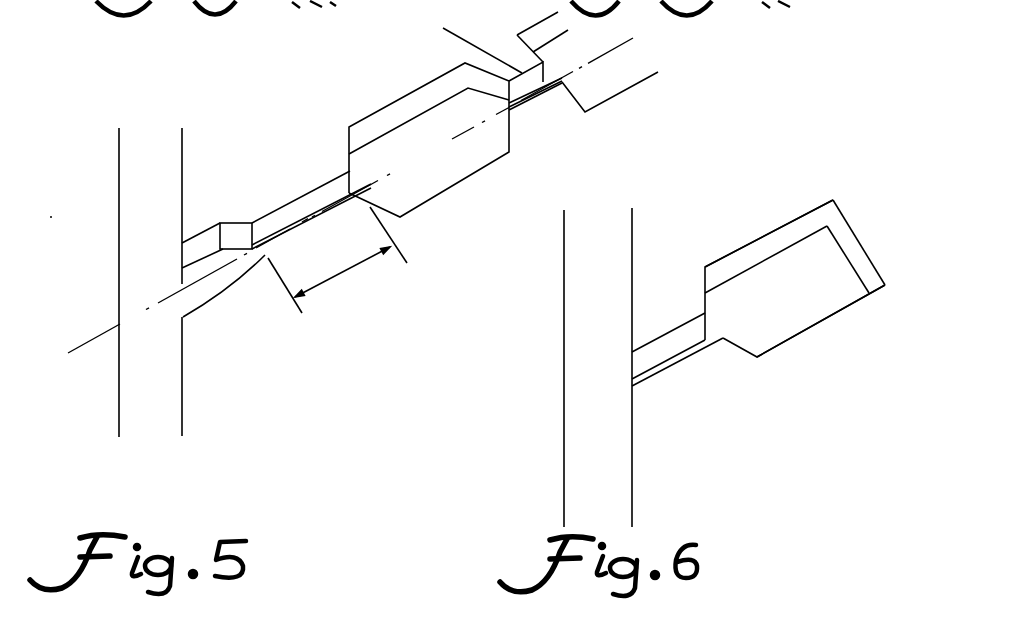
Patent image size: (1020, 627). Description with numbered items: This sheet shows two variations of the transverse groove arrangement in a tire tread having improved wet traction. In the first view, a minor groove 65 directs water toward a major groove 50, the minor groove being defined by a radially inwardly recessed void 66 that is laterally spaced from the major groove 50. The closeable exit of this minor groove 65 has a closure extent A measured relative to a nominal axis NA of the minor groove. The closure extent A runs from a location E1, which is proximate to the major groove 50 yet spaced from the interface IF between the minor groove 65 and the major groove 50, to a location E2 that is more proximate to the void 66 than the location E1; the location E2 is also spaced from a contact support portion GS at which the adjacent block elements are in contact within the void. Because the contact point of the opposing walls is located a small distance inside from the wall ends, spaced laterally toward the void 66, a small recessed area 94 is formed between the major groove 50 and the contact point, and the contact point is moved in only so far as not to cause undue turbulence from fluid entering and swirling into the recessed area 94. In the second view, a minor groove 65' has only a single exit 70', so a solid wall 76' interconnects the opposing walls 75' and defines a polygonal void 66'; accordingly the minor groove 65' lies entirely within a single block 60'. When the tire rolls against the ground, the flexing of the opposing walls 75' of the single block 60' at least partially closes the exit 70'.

In FIG. 5, the major groove 50 is at (166, 180).
In FIG. 5, the minor groove 65 is at (470, 55).
In FIG. 5, the void 66 is at (429, 140).
In FIG. 5, the recessed area 94 is at (213, 283).
In FIG. 5, the location E1 is at (263, 253).
In FIG. 5, the location E2 is at (371, 189).
In FIG. 5, the closure extent A is at (337, 260).
In FIG. 5, the interface IF is at (182, 282).
In FIG. 5, the guide surface GS is at (520, 58).
In FIG. 5, the nominal axis NA is at (86, 346).
In FIG. 6, the single block 60' is at (684, 359).
In FIG. 6, the minor groove 65' is at (821, 324).
In FIG. 6, the void 66' is at (795, 278).
In FIG. 6, the single exit 70' is at (604, 375).
In FIG. 6, the opposing walls 75' is at (769, 233).
In FIG. 6, the solid wall 76' is at (838, 231).